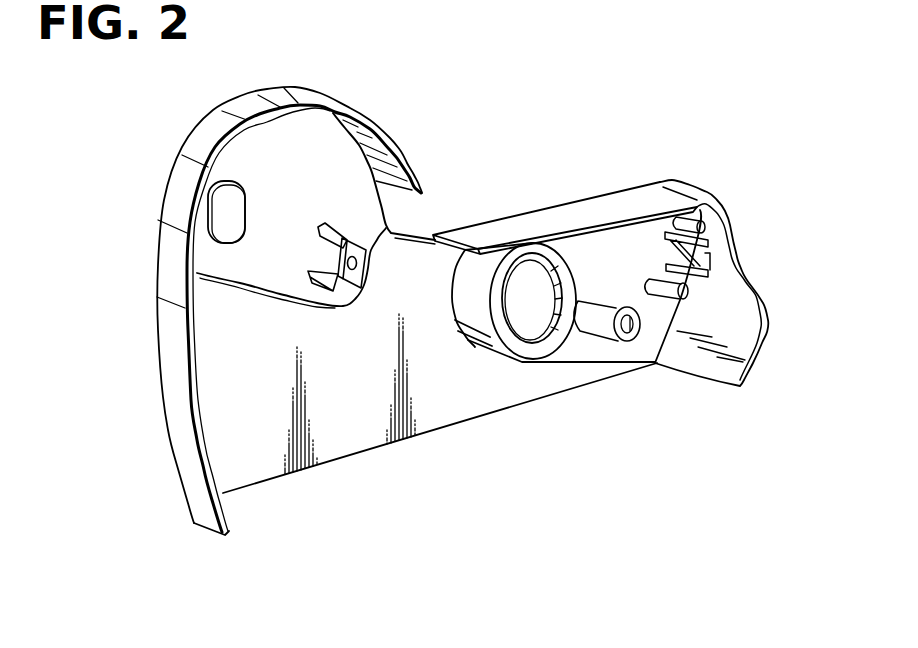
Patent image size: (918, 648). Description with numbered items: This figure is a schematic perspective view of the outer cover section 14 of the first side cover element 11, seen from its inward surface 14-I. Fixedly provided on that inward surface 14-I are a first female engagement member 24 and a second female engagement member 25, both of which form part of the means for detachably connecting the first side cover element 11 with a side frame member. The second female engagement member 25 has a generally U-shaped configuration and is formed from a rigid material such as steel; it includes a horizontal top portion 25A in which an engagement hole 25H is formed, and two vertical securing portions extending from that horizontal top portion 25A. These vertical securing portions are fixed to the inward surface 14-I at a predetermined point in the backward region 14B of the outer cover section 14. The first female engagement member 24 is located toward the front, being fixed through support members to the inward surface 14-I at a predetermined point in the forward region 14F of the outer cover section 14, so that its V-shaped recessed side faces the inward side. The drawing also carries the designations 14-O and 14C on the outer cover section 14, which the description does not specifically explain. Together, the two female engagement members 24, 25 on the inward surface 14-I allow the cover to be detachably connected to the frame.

The outer cover section 14 is at (421, 129).
The first side cover element 11 is at (436, 320).
The outer rim of housing 14-O is at (165, 397).
The backward region 14B is at (248, 427).
The inward surface 14-I is at (423, 407).
The flange rail 14C is at (418, 230).
The forward region 14F is at (637, 348).
The second female engagement member 25 is at (356, 238).
The horizontal top portion 25A is at (372, 270).
The engagement hole 25H is at (358, 265).
The first female engagement member 24 is at (712, 242).